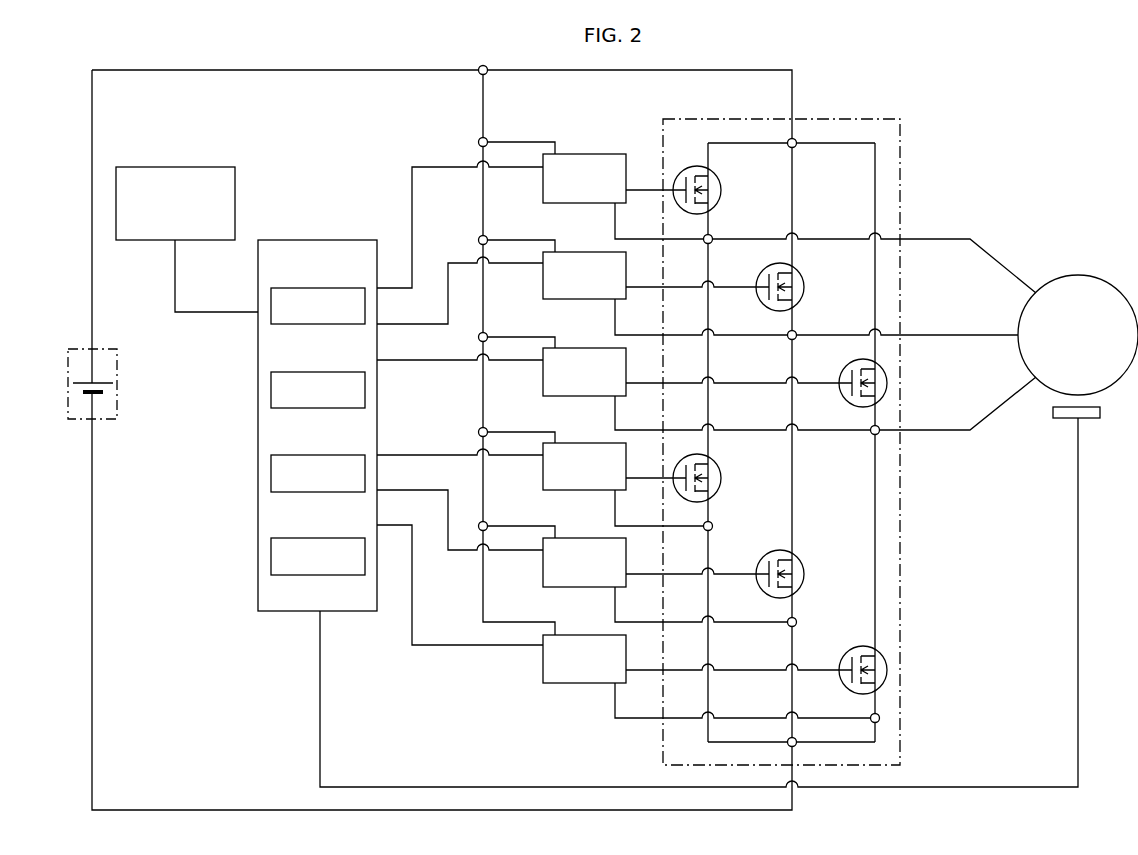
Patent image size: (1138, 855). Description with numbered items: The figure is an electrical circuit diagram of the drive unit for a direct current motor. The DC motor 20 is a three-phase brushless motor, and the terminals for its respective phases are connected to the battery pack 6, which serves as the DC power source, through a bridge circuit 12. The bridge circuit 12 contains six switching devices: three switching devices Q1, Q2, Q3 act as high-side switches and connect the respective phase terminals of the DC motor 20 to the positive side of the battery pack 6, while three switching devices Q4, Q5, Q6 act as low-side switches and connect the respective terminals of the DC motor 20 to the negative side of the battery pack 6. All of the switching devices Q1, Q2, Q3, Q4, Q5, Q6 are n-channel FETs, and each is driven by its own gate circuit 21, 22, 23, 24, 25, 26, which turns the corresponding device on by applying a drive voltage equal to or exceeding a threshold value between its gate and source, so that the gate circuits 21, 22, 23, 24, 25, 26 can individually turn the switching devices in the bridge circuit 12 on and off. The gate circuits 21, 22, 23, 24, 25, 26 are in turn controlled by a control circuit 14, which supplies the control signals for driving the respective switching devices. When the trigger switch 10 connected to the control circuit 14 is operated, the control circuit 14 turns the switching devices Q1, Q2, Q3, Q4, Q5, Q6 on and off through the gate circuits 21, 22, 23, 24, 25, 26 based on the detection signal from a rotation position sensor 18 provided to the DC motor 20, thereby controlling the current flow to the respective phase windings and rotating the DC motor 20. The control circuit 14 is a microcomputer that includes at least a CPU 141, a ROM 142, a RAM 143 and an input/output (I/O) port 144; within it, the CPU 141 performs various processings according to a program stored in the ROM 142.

The battery pack 6 is at (117, 373).
The trigger switch 10 is at (186, 167).
The bridge circuit 12 is at (832, 119).
The control circuit 14 is at (318, 240).
The CPU 141 is at (318, 288).
The ROM 142 is at (318, 372).
The RAM 143 is at (318, 455).
The input/output (I/O) port 144 is at (318, 538).
The rotation position sensor 18 is at (1087, 418).
The DC motor 20 is at (1103, 285).
The gate circuit 21 is at (585, 154).
The gate circuit 22 is at (585, 252).
The gate circuit 23 is at (585, 348).
The gate circuit 24 is at (585, 443).
The gate circuit 25 is at (585, 538).
The gate circuit 26 is at (585, 635).
The switching device Q1 is at (713, 178).
The switching device Q2 is at (796, 275).
The switching device Q3 is at (879, 371).
The switching device Q4 is at (713, 466).
The switching device Q5 is at (796, 562).
The switching device Q6 is at (879, 658).